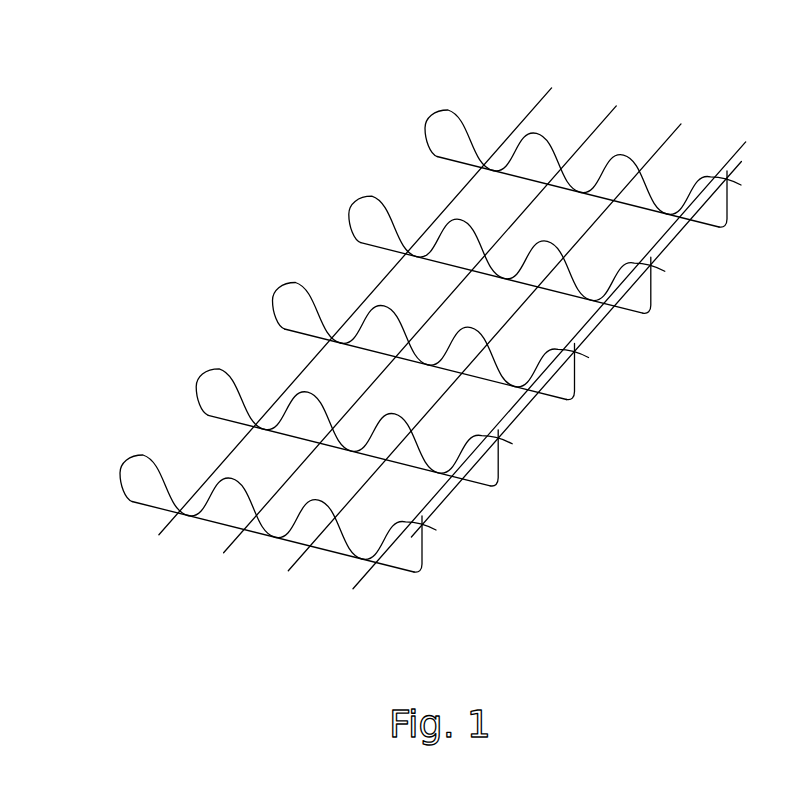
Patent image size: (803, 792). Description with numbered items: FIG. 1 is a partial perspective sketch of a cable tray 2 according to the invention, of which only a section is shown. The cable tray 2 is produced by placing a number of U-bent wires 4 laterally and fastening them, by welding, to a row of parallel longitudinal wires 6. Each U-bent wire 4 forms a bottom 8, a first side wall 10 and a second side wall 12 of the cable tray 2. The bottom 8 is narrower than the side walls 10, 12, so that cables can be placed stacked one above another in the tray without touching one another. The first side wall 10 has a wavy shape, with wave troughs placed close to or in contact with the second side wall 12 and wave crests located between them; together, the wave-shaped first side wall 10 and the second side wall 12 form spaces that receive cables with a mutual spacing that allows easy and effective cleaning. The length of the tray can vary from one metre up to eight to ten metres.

The cable tray 2 is at (250, 108).
The U-bent wire 4 is at (127, 450).
The longitudinal wire 6 is at (180, 522).
The bottom 8 is at (117, 466).
The first side wall 10 is at (632, 145).
The second side wall 12 is at (650, 220).